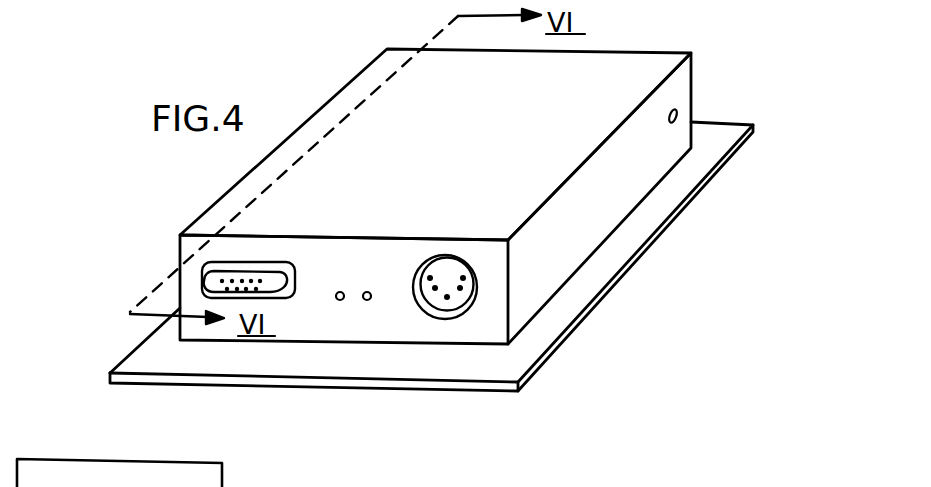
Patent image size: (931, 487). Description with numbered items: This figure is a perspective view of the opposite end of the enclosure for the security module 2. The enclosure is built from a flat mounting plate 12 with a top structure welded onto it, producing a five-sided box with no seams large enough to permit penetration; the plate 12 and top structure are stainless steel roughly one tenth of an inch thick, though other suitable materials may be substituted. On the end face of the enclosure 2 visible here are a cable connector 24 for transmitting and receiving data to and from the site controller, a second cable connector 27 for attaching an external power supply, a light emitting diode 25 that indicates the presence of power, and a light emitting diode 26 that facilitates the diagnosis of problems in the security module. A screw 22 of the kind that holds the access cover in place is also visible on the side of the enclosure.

The security module 2 is at (495, 51).
The flat mounting plate 12 is at (610, 262).
The screws 22 is at (676, 111).
The cable connector 24 is at (246, 280).
The light emitting diode 25 is at (338, 300).
The light emitting diode 26 is at (366, 300).
The cable connector 27 is at (459, 306).